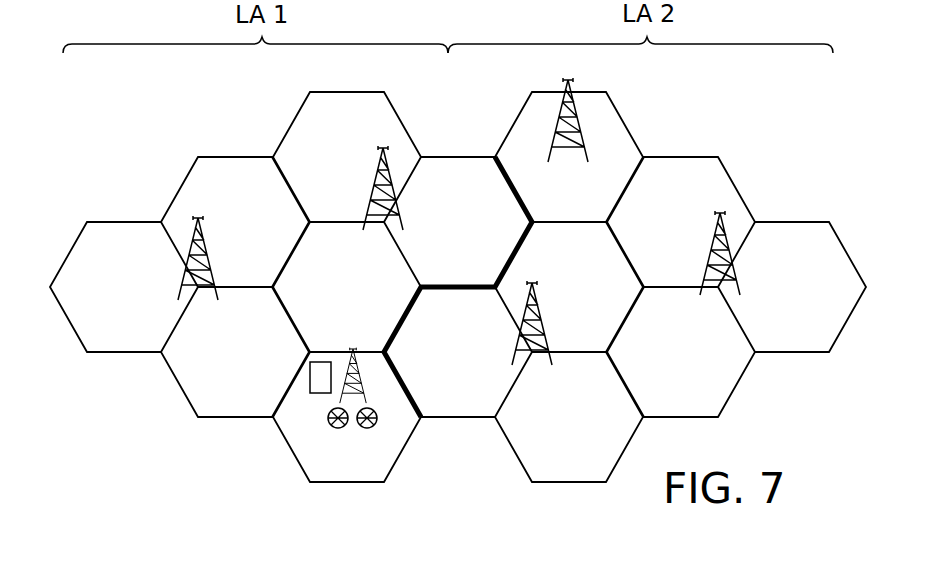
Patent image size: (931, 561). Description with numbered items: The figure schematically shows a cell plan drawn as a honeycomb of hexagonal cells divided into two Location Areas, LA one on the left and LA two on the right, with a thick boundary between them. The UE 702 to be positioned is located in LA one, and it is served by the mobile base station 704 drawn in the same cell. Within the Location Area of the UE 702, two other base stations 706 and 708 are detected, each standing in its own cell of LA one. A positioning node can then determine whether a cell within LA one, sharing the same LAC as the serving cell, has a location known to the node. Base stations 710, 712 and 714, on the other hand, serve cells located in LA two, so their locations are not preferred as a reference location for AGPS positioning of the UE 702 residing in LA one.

The UE 702 is at (308, 388).
The mobile base station 704 is at (378, 420).
The base station 706 is at (176, 292).
The base station 708 is at (403, 228).
The base station 710 is at (512, 360).
The base station 712 is at (740, 290).
The base station 714 is at (587, 150).